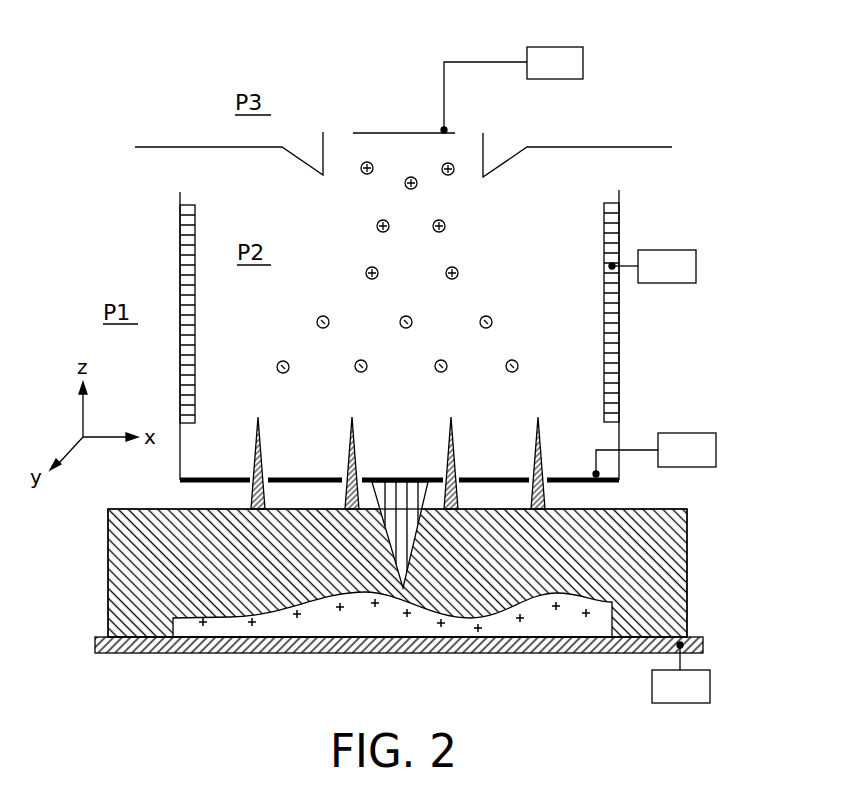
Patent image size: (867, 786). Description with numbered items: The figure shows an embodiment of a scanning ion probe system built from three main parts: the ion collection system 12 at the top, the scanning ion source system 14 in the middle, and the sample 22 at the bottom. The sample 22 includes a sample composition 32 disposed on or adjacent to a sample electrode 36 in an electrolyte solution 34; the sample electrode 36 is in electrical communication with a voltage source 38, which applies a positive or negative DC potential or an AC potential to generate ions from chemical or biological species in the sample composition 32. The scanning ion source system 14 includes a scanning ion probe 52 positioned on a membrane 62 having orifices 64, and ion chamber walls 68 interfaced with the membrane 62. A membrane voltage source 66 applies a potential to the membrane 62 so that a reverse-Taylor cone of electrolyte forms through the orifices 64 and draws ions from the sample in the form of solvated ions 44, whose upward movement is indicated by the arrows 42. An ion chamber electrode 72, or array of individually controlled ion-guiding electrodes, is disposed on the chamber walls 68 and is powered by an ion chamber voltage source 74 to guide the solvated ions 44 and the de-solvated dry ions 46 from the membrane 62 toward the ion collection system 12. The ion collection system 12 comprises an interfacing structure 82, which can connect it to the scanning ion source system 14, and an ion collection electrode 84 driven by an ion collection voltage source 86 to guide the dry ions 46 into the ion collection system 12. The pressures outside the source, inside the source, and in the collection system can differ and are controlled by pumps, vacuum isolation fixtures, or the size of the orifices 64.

The ion collection system 12 is at (710, 71).
The scanning ion source system 14 is at (750, 307).
The sample 22 is at (727, 641).
The sample composition 32 is at (582, 647).
The electrolyte solution 34 is at (643, 634).
The sample electrode 36 is at (473, 653).
The voltage source 38 is at (722, 687).
The ion flow direction 42 is at (419, 446).
The solvated ions 44 is at (273, 318).
The de-solvated ions 46 is at (505, 174).
The scanning ion probe 52 is at (405, 575).
The membrane 62 is at (483, 477).
The orifices 64 is at (271, 466).
The membrane voltage source 66 is at (740, 448).
The ion chamber walls 68 is at (620, 440).
The ion chamber electrode 72 is at (604, 368).
The ion chamber voltage source 74 is at (714, 260).
The interfacing structure 82 is at (600, 147).
The ion collection electrode 84 is at (405, 132).
The ion collection voltage source 86 is at (597, 63).